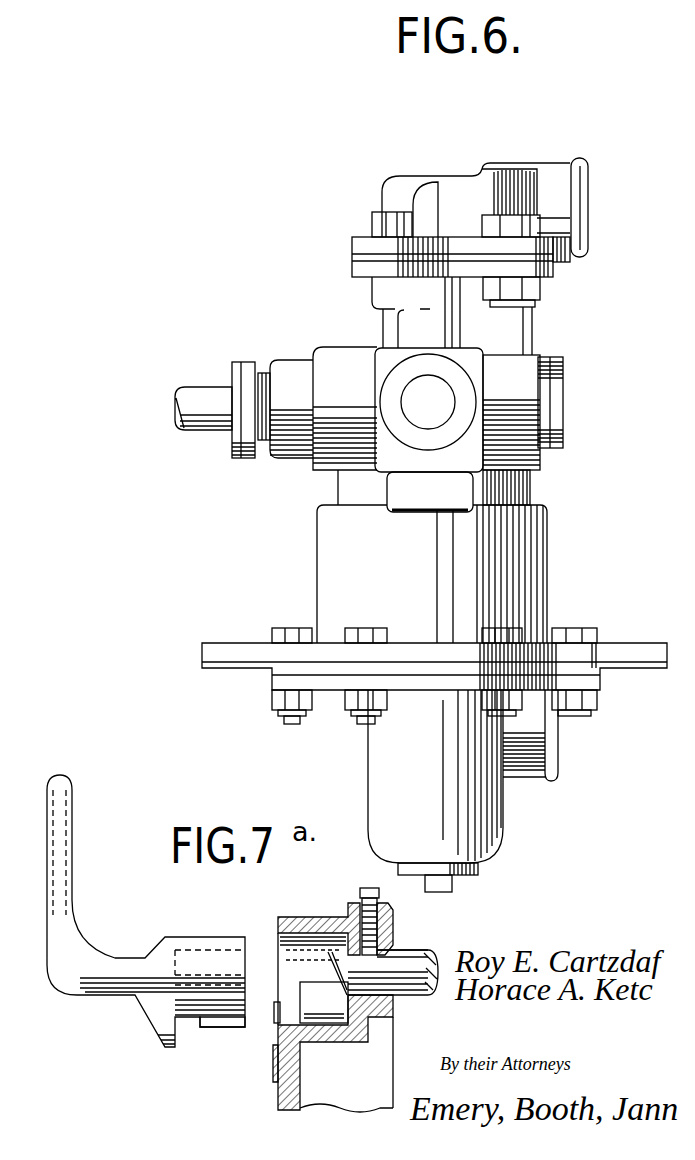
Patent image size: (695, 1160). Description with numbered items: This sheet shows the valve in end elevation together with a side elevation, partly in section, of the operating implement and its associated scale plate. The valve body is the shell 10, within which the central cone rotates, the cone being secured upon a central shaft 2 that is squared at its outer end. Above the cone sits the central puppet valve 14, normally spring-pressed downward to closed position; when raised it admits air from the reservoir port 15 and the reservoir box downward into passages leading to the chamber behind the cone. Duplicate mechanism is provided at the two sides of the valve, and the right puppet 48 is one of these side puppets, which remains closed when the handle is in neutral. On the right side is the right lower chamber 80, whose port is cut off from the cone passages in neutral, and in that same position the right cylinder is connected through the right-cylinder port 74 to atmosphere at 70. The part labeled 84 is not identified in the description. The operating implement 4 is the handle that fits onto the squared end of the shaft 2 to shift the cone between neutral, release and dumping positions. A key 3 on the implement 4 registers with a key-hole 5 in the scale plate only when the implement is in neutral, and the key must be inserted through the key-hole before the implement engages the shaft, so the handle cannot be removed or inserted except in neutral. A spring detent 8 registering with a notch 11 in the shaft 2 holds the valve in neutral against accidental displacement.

In FIG. 6, the central puppet valve 14 is at (398, 187).
In FIG. 6, the right puppet 48 is at (498, 192).
In FIG. 6, the reservoir port 15 is at (578, 203).
In FIG. 6, the shell 10 is at (330, 350).
In FIG. 6, the central shaft 2 is at (204, 392).
In FIG. 7a, the central shaft 2 is at (393, 972).
In FIG. 6, the right-cylinder port 74 is at (428, 402).
In FIG. 6, the atmosphere exhaust 70 is at (454, 512).
In FIG. 6, the right lower chamber 80 is at (432, 681).
In FIG. 6, the bracket 84 is at (558, 750).
In FIG. 7a, the operating implement 4 is at (62, 897).
In FIG. 7a, the key 3 is at (232, 1027).
In FIG. 7a, the key-hole 5 is at (276, 1025).
In FIG. 7a, the spring detent 8 is at (395, 946).
In FIG. 7a, the notch 11 is at (402, 952).